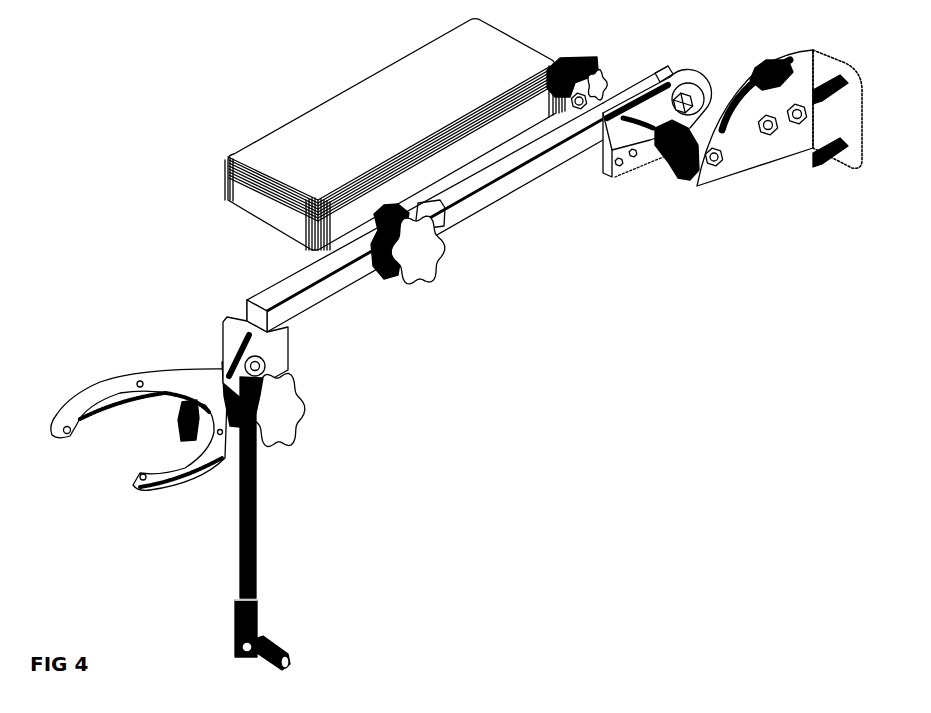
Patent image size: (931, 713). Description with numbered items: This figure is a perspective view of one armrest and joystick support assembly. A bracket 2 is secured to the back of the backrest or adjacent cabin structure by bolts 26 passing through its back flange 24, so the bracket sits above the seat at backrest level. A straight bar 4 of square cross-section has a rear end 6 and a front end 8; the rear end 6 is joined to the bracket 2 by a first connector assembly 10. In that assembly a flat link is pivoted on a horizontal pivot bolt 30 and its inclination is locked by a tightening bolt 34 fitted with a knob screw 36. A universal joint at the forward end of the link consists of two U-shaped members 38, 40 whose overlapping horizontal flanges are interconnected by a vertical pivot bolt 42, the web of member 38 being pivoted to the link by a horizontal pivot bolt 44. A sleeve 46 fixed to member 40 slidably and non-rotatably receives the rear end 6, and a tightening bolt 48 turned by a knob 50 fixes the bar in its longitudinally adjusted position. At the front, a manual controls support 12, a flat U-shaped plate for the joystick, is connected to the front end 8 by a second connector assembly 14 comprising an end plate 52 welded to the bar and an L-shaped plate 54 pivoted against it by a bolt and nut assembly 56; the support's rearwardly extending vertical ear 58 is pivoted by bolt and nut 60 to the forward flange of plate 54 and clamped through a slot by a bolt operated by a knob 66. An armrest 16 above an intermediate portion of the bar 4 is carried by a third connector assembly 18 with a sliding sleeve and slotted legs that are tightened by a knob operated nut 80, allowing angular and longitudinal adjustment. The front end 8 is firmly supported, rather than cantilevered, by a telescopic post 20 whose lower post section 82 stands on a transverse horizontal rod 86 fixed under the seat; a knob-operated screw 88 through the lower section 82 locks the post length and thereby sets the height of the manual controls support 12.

The bracket 2 is at (857, 169).
The bar 4 is at (325, 295).
The rear end 6 is at (668, 76).
The front end 8 is at (287, 294).
The first connector assembly 10 is at (690, 188).
The manual controls support 12 is at (165, 488).
The second connector assembly 14 is at (300, 375).
The armrest 16 is at (272, 147).
The third connector assembly 18 is at (462, 256).
The post 20 is at (256, 503).
The back flange 24 is at (850, 120).
The bolts 26 is at (822, 162).
The pivot bolt 30 is at (769, 132).
The tightening bolt 34 is at (797, 122).
The knob screw 36 is at (760, 68).
The U-shaped member 38 is at (668, 162).
The U-shaped member 40 is at (605, 168).
The vertical pivot bolt 42 is at (697, 80).
The horizontal pivot bolt 44 is at (718, 163).
The sleeve 46 is at (618, 100).
The tightening bolt 48 is at (582, 92).
The knob 50 is at (563, 72).
The end plate 52 is at (245, 304).
The L-shaped plate 54 is at (242, 330).
The bolt and nut assembly 56 is at (238, 347).
The vertical ear 58 is at (225, 363).
The bolt and nut 60 is at (268, 360).
The knob 66 is at (275, 415).
The knob operated nut 80 is at (415, 262).
The lower post section 82 is at (265, 560).
The transverse horizontal rod 86 is at (285, 645).
The knob-operated screw 88 is at (178, 423).